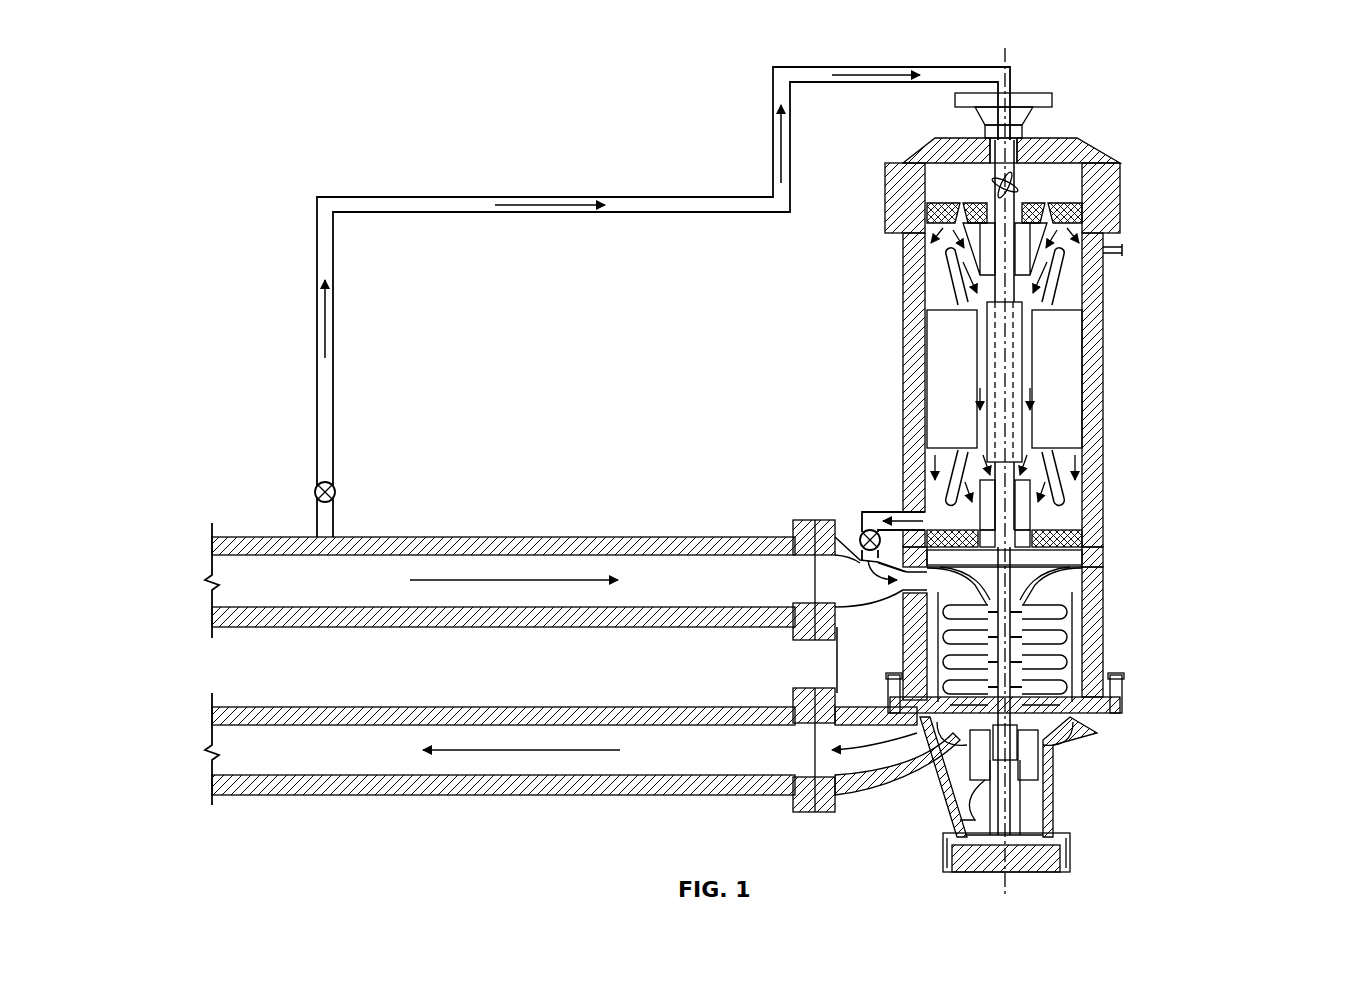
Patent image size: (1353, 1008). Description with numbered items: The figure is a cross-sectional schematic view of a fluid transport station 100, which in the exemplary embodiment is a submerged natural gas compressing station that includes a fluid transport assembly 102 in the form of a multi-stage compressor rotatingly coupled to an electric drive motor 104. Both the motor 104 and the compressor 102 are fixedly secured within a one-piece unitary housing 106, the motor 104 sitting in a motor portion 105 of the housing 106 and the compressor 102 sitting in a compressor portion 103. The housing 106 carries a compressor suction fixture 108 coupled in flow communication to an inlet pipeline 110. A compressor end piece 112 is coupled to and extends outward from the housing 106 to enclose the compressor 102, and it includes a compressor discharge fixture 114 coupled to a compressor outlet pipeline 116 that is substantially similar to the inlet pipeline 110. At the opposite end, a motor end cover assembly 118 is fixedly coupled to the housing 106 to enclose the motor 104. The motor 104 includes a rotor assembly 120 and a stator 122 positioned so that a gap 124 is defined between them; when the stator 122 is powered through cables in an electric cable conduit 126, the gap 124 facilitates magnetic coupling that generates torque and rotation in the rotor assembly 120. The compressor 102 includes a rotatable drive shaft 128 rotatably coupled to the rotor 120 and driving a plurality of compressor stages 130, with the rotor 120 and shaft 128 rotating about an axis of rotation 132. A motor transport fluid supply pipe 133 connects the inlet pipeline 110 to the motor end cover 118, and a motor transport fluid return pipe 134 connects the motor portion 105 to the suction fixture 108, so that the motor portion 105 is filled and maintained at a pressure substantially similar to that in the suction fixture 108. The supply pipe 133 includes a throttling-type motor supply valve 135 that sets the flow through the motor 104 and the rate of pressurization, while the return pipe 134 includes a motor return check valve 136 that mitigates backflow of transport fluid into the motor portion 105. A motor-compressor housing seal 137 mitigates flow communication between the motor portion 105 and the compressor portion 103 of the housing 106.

The fluid transport station 100 is at (297, 87).
The fluid transport assembly 102 is at (1046, 628).
The compressor portion 103 is at (1097, 667).
The electric drive motor 104 is at (1035, 464).
The motor portion 105 is at (915, 287).
The housing 106 is at (1095, 412).
The compressor suction fixture 108 is at (838, 520).
The inlet pipeline 110 is at (608, 536).
The compressor end piece 112 is at (1117, 713).
The compressor discharge fixture 114 is at (883, 773).
The compressor outlet pipeline 116 is at (585, 796).
The motor end cover assembly 118 is at (1090, 152).
The rotor assembly 120 is at (1018, 352).
The stator 122 is at (1073, 385).
The gap 124 is at (1028, 372).
The electric cable conduit 126 is at (1110, 255).
The rotatable drive shaft 128 is at (1068, 590).
The compressor stages 130 is at (1052, 650).
The axis of rotation 132 is at (1010, 57).
The motor transport fluid supply pipe 133 is at (575, 214).
The motor transport fluid return pipe 134 is at (890, 512).
The motor supply valve 135 is at (338, 492).
The motor return check valve 136 is at (862, 528).
The motor-compressor housing seal 137 is at (1030, 530).